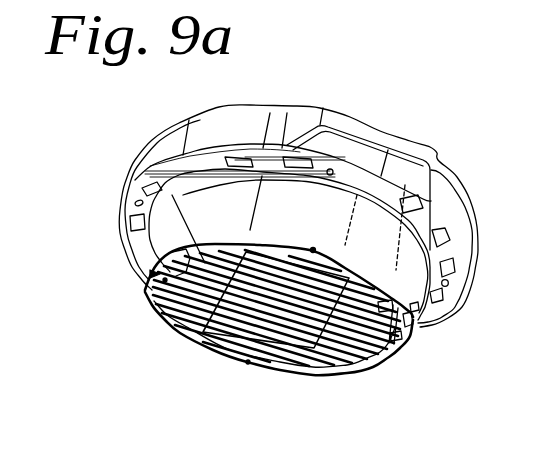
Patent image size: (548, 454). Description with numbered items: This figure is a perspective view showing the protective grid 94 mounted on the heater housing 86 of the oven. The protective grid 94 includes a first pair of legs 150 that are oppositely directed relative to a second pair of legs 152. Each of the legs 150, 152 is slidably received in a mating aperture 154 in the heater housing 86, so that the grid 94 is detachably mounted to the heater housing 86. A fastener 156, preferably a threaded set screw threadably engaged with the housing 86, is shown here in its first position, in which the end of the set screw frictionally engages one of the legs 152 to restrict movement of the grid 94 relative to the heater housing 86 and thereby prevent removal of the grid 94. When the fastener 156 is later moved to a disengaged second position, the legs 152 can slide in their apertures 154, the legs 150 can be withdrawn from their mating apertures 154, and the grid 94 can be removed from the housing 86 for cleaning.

The first pair of legs 150 is at (146, 193).
The mating aperture 154 is at (140, 245).
The heater housing 86 is at (150, 274).
The protective grid 94 is at (232, 347).
The second pair of legs 152 is at (384, 306).
The fastener 156 is at (407, 318).